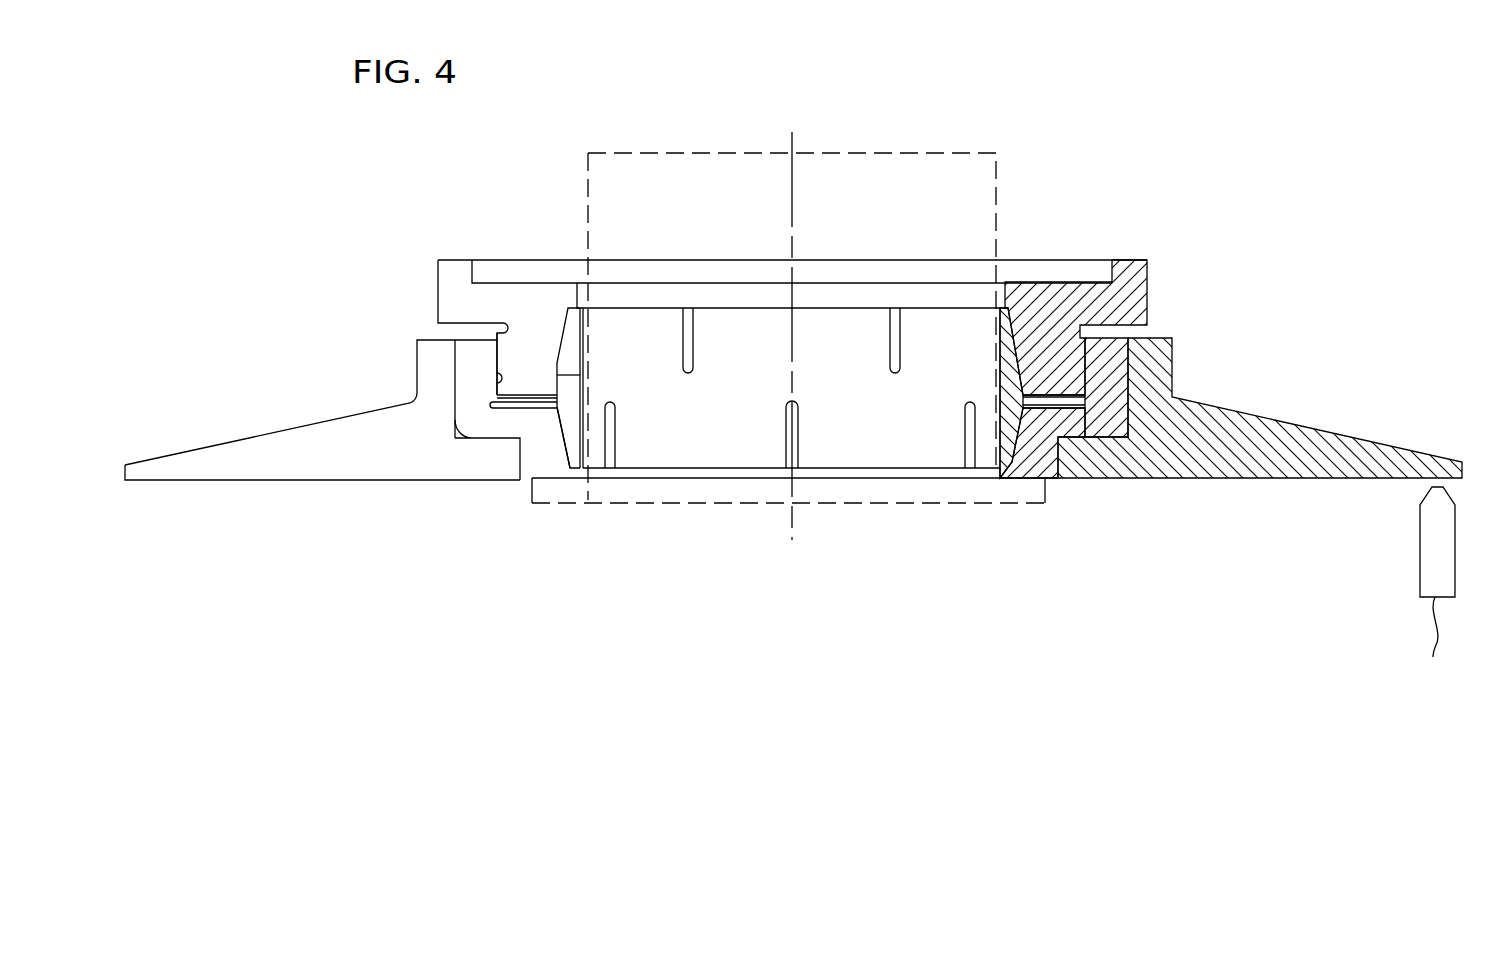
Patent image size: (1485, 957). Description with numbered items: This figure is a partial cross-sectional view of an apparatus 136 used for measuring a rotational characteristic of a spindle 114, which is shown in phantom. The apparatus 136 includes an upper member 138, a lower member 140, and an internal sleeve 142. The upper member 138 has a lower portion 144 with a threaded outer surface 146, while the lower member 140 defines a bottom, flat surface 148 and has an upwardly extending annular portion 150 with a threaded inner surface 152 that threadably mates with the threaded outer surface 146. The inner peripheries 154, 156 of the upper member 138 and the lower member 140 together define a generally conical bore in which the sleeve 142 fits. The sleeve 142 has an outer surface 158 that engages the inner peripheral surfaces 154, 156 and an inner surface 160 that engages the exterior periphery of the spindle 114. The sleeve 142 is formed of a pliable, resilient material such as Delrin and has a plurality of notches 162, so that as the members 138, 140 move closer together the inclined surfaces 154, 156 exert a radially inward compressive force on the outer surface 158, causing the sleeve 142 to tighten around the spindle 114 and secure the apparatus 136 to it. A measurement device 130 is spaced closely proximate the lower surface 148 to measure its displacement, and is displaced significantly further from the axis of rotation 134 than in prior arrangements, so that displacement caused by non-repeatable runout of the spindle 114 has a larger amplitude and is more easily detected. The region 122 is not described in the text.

The spindle 114 is at (997, 218).
The base region 122 is at (1045, 503).
The measurement device 130 is at (1418, 583).
The axis of rotation 134 is at (795, 218).
The apparatus 136 is at (1128, 213).
The upper member 138 is at (437, 260).
The lower member 140 is at (482, 482).
The internal sleeve 142 is at (585, 435).
The lower portion 144 is at (527, 360).
The threaded outer surface 146 is at (497, 348).
The bottom flat surface 148 is at (228, 482).
The annular portion 150 is at (422, 357).
The threaded inner surface 152 is at (497, 387).
The inner periphery of upper member 154 is at (565, 330).
The inner periphery of lower member 156 is at (563, 440).
The outer surface 158 is at (563, 338).
The inner surface 160 is at (890, 434).
The notches 162 is at (683, 352).